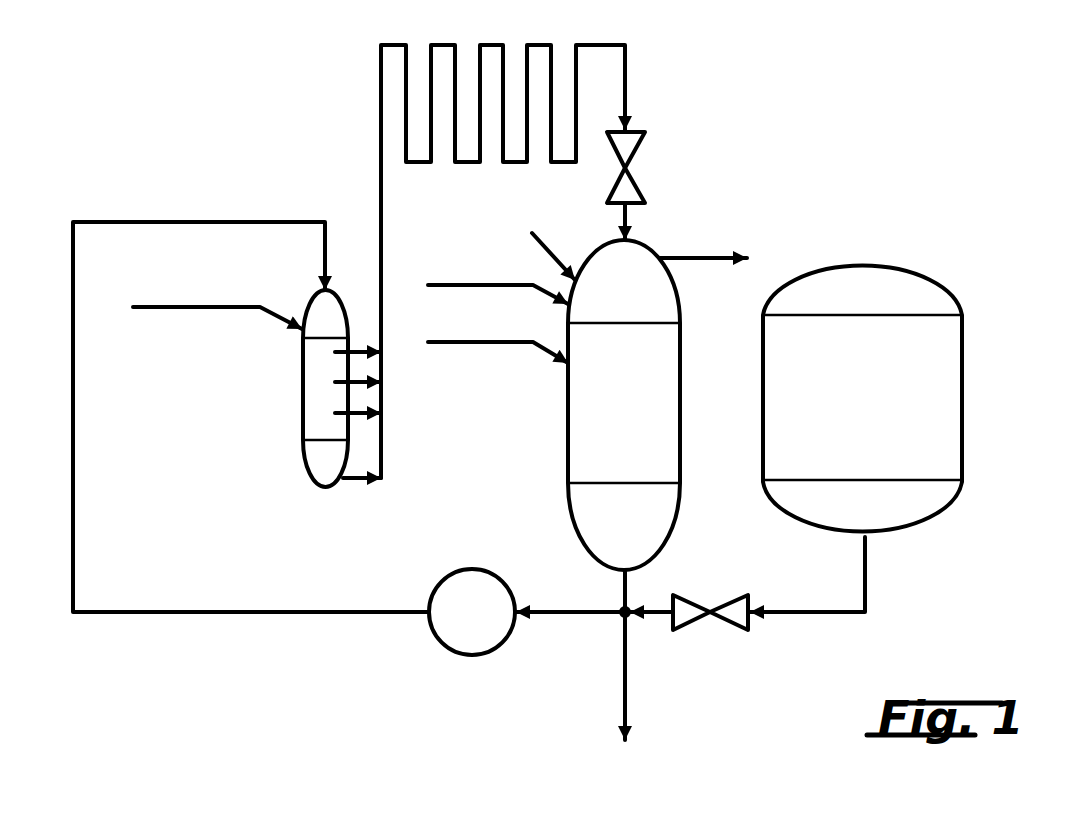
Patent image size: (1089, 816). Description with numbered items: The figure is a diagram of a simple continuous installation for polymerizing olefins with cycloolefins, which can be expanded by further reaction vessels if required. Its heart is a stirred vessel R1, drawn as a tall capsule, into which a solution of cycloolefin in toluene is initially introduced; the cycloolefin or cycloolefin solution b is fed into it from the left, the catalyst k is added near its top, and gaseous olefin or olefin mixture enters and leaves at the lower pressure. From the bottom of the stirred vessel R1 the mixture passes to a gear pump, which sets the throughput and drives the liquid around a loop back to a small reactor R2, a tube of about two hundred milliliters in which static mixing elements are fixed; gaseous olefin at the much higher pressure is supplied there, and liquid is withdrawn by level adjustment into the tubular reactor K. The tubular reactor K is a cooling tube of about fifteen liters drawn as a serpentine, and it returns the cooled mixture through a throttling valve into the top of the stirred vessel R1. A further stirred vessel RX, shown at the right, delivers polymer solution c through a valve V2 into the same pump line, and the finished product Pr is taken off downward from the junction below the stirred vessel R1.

The tubular reactor K is at (488, 261).
The stirred vessel R1 is at (641, 411).
The catalyst k is at (553, 246).
The cycloolefin or cycloolefin solution b is at (498, 335).
The stirred vessel RX is at (882, 410).
The polymer solution c is at (807, 574).
The valve V2 is at (689, 630).
The product Pr is at (606, 655).
The tubular mixing reactor R2 is at (317, 410).